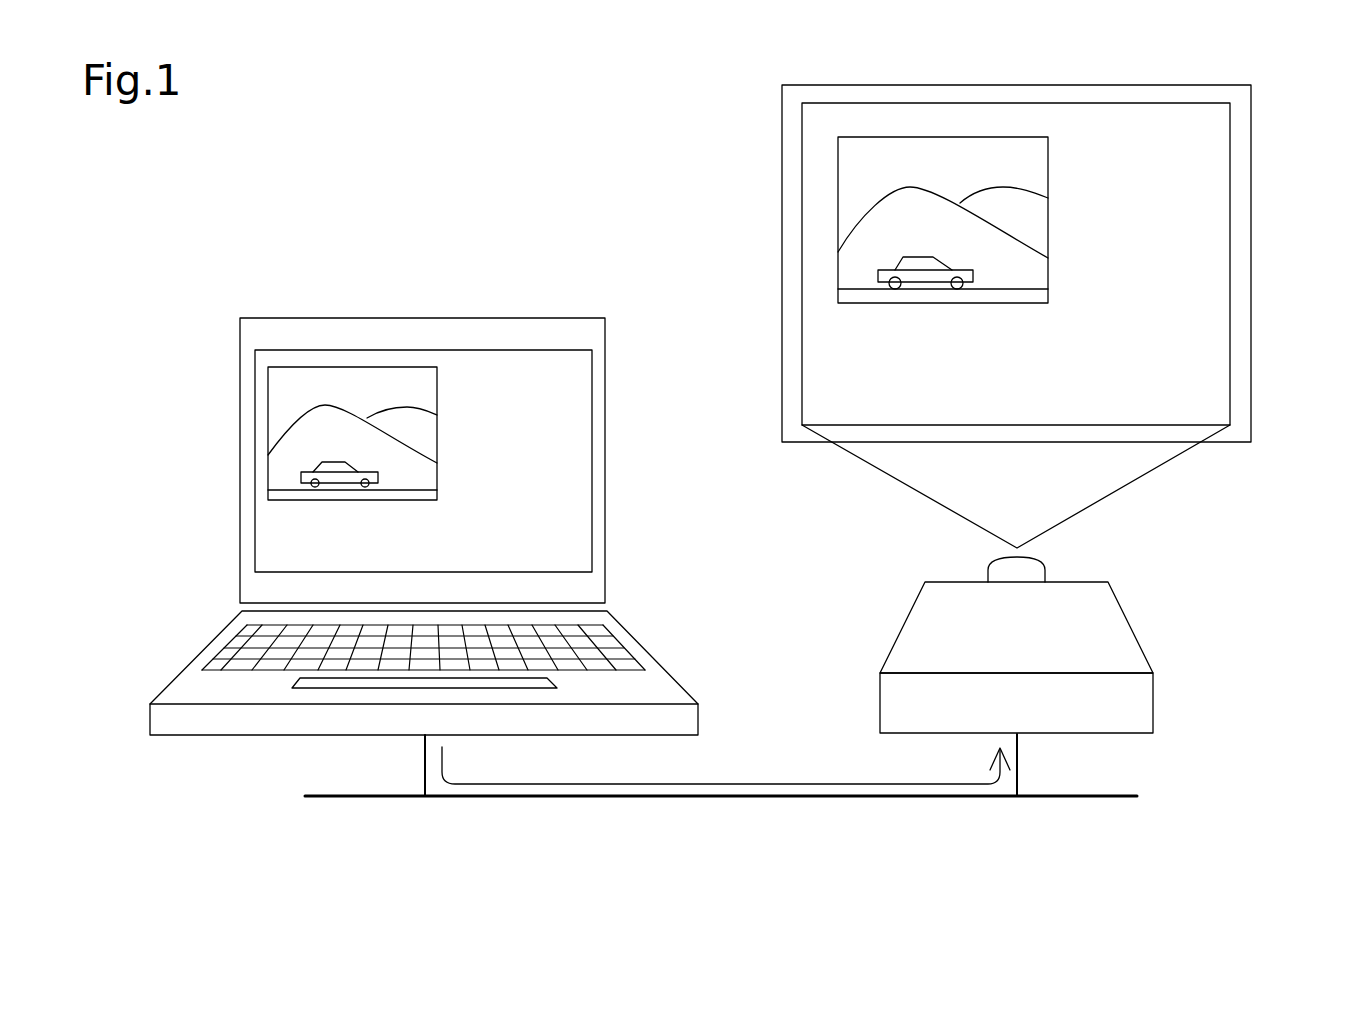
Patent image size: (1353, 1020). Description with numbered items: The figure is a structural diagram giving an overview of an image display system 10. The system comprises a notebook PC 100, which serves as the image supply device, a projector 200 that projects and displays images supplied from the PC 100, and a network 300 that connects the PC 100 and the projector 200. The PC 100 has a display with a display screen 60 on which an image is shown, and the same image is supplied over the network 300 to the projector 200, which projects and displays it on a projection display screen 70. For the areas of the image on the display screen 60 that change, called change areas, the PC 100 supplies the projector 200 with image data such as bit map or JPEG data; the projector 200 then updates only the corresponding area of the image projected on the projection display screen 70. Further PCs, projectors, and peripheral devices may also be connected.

The image display system 10 is at (344, 166).
The display screen 60 is at (592, 462).
The projection display screen 70 is at (1251, 250).
The notebook PC 100 is at (453, 526).
The projector 200 is at (1133, 626).
The network 300 is at (741, 800).